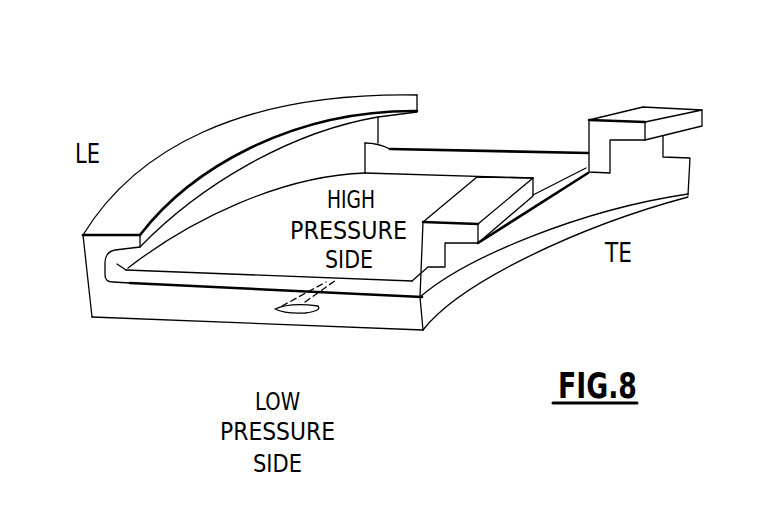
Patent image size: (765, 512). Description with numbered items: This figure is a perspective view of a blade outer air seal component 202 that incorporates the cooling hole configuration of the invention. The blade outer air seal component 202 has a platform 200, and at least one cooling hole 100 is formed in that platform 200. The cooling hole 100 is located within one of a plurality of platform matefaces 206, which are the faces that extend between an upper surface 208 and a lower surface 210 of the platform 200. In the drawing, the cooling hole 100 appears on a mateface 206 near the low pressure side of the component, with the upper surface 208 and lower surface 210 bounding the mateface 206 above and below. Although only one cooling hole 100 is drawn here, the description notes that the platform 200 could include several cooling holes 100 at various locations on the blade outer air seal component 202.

The cooling hole 100 is at (297, 318).
The platform 200 is at (165, 281).
The blade outer air seal component 202 is at (622, 90).
The platform mateface 206 is at (433, 302).
The upper surface 208 is at (468, 146).
The lower surface 210 is at (533, 243).